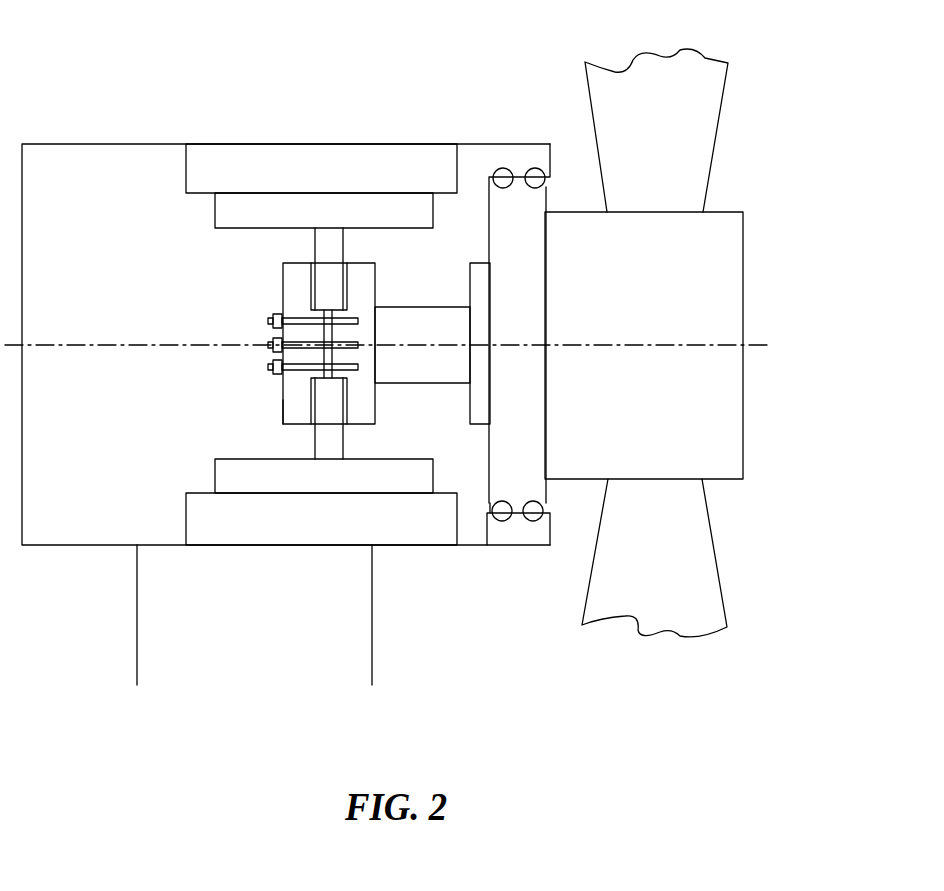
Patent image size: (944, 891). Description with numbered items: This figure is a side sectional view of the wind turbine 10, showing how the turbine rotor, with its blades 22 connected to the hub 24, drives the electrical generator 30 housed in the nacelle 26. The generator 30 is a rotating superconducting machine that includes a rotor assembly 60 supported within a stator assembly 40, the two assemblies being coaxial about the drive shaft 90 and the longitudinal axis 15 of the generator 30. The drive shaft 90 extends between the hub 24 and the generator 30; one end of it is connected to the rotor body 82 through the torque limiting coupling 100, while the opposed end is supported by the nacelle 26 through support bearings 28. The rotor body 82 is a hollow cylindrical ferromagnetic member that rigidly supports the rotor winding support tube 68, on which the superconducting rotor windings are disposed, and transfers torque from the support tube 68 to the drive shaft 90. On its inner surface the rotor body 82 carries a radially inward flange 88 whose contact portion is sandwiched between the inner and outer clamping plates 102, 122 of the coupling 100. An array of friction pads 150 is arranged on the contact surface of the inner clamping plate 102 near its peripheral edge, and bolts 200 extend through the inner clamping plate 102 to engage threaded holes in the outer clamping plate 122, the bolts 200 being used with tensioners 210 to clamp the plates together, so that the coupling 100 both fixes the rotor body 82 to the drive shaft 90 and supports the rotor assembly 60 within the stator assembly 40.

The wind turbine 10 is at (80, 29).
The longitudinal axis 15 is at (642, 345).
The blades 22 is at (648, 116).
The hub 24 is at (656, 279).
The nacelle 26 is at (472, 310).
The support bearings 28 is at (535, 176).
The electrical generator 30 is at (176, 167).
The stator assembly 40 is at (307, 150).
The rotor assembly 60 is at (100, 490).
The rotor winding support tube 68 is at (275, 343).
The rotor body 82 is at (233, 210).
The flange 88 is at (327, 246).
The drive shaft 90 is at (452, 339).
The torque limiting coupling 100 is at (200, 260).
The inner clamping plate 102 is at (367, 417).
The outer clamping plate 122 is at (306, 410).
The friction pads 150 is at (312, 285).
The bolts 200 is at (352, 322).
The tensioners 210 is at (273, 318).